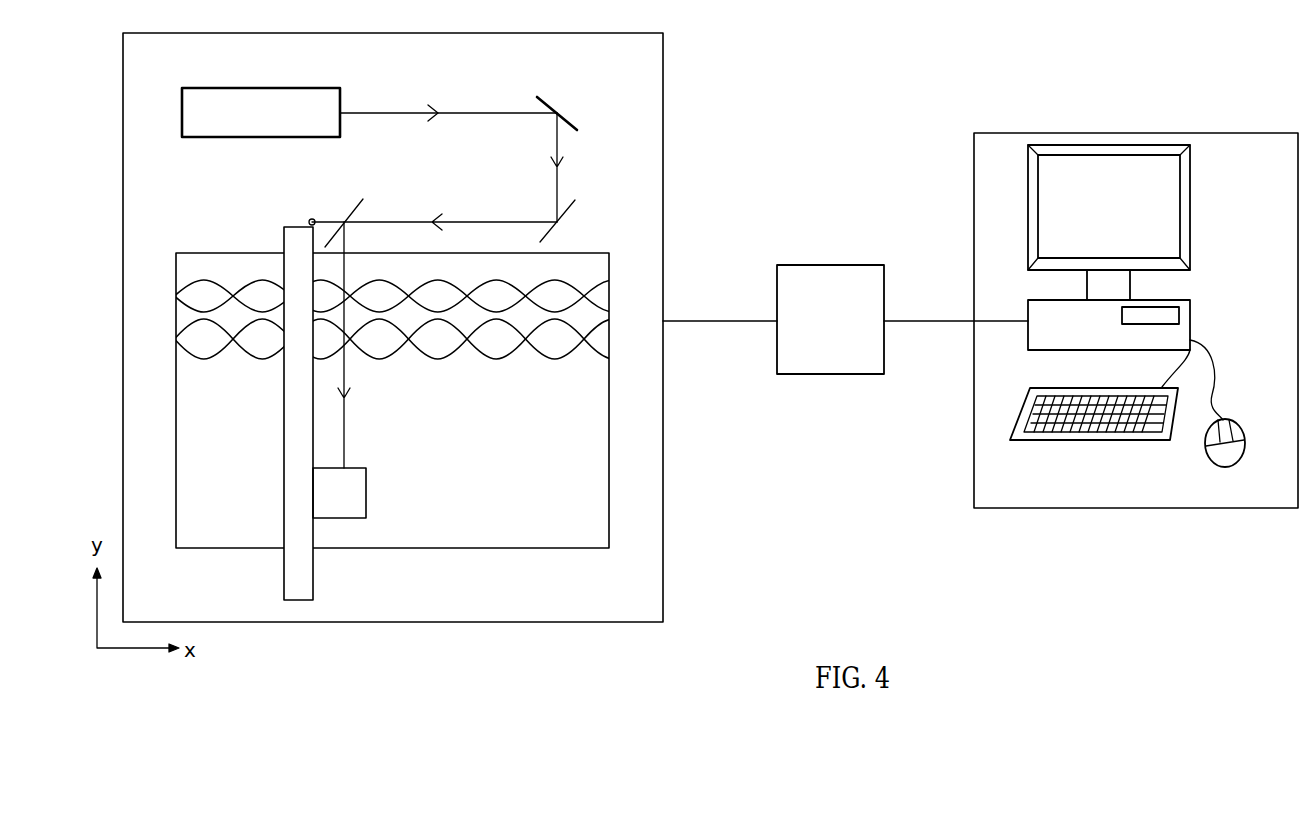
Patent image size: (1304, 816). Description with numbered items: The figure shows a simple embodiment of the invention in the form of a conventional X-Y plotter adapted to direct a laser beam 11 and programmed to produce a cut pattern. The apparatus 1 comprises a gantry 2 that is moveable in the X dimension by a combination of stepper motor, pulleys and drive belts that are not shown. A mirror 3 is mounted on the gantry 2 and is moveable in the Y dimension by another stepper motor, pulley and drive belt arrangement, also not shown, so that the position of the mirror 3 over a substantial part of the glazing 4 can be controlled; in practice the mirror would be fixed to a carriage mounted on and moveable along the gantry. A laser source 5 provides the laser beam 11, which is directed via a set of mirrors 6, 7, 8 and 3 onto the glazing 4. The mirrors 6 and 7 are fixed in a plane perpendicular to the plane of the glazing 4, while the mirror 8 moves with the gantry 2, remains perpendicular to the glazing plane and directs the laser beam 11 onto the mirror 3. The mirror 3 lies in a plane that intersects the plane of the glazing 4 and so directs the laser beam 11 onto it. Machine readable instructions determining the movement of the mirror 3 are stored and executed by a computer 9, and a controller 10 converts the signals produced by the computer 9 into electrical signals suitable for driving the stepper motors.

The apparatus 1 is at (652, 80).
The gantry 2 is at (305, 585).
The mirror 3 is at (355, 490).
The glazing 4 is at (564, 523).
The laser source 5 is at (298, 95).
The mirror 6 is at (545, 100).
The mirror 7 is at (568, 208).
The mirror 8 is at (352, 212).
The computer 9 is at (1243, 143).
The controller 10 is at (832, 355).
The laser beam 11 is at (498, 112).